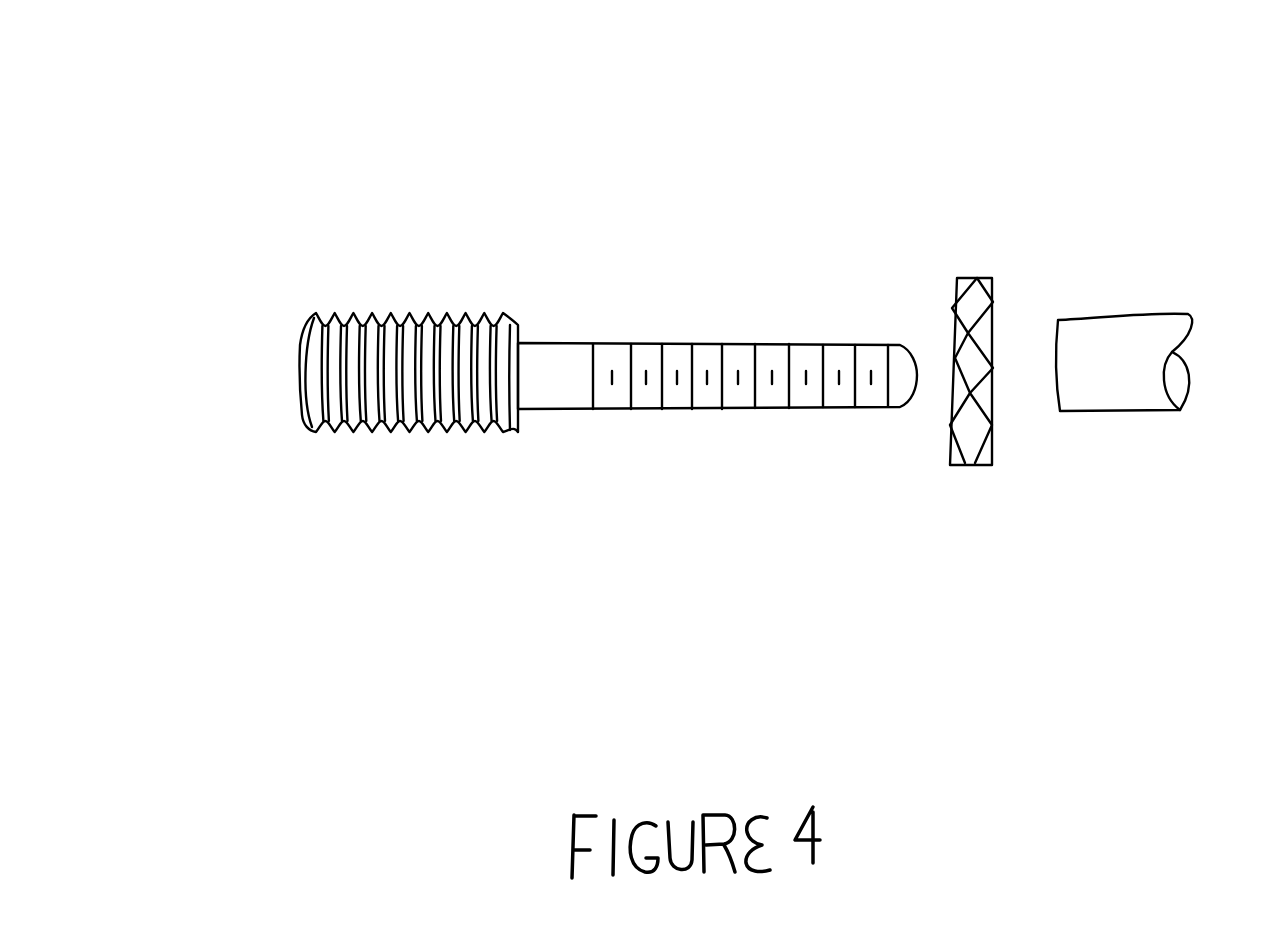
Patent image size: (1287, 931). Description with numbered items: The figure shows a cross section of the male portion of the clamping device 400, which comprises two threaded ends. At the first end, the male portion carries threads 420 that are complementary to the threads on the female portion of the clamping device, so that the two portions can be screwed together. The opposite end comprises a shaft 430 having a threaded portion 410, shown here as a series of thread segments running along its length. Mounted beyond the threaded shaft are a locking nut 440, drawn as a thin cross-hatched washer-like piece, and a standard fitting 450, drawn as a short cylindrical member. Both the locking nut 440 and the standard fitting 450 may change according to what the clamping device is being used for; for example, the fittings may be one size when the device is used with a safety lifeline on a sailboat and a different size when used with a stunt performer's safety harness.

The male portion of clamping device 400 is at (289, 138).
The threaded portion of shaft 410 is at (683, 343).
The threads 420 is at (403, 428).
The threaded shaft 430 is at (571, 410).
The locking nut 440 is at (987, 277).
The standard fittings 450 is at (1127, 412).